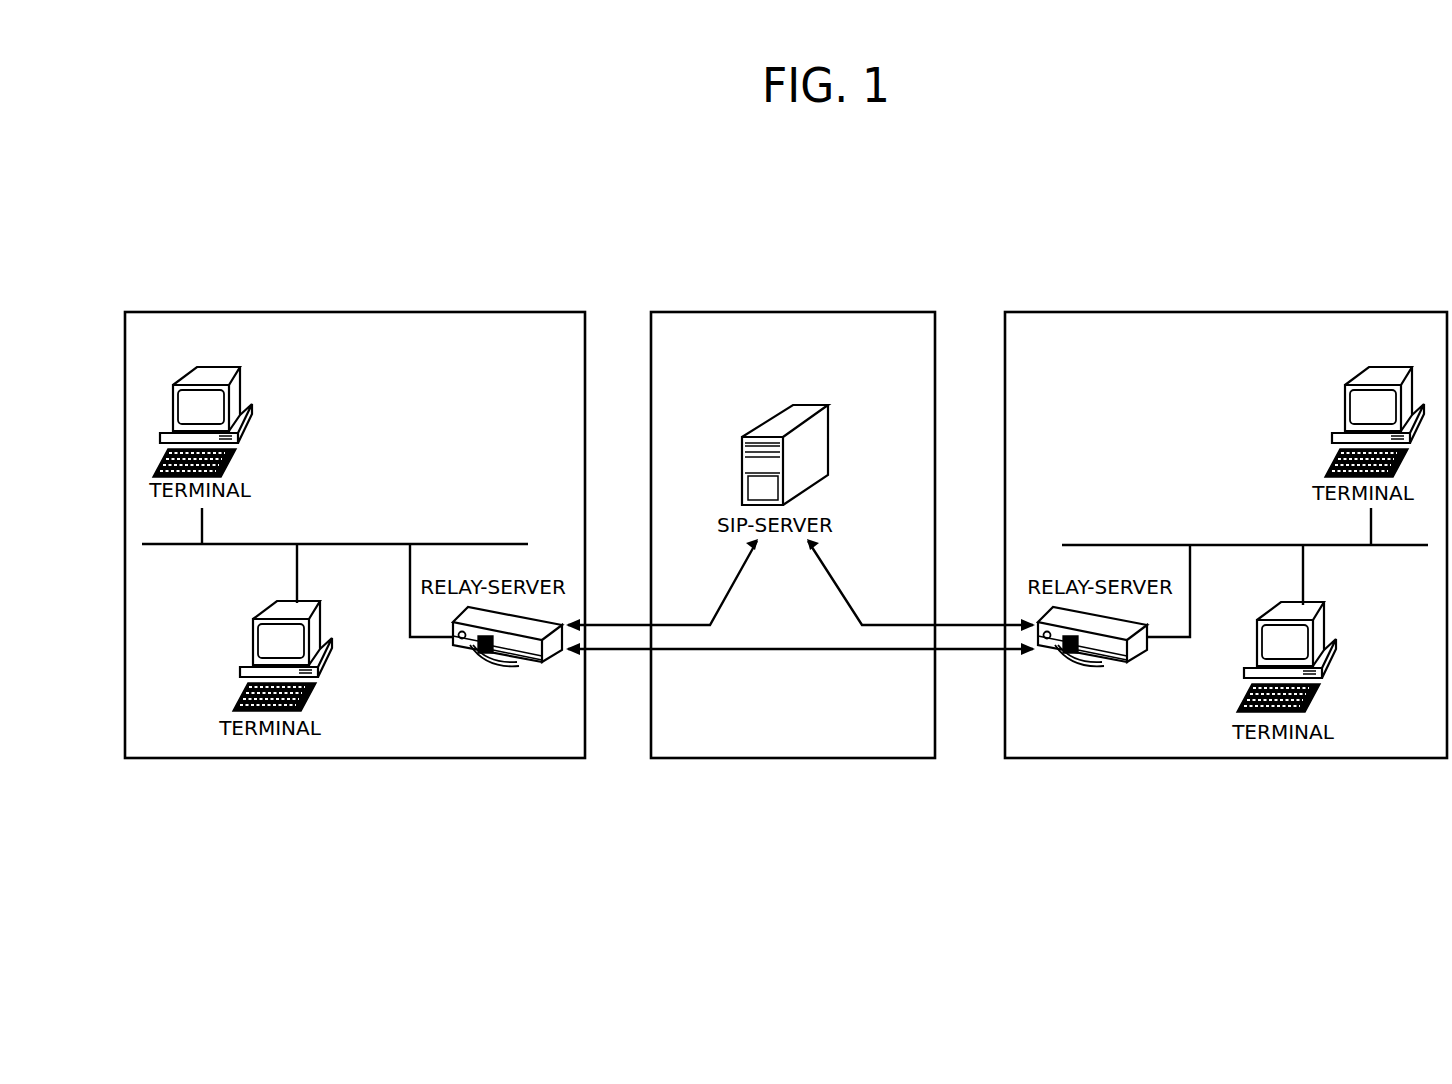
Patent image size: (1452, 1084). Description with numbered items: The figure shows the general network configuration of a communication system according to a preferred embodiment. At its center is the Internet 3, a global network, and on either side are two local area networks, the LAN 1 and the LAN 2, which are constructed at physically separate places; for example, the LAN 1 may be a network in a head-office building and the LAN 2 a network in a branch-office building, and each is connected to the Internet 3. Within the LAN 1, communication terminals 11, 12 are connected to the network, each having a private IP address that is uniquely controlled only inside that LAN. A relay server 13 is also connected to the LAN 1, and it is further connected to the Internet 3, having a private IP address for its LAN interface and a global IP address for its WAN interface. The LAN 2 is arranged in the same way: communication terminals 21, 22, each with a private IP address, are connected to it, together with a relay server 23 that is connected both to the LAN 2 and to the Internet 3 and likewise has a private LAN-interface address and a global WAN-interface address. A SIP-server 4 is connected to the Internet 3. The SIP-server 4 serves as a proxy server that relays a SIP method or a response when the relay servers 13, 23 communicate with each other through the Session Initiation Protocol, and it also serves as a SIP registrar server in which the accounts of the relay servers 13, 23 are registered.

The LAN 1 is at (537, 312).
The LAN 2 is at (1395, 312).
The Internet 3 is at (885, 312).
The SIP-server 4 is at (830, 437).
The communication terminal 11 is at (327, 667).
The communication terminal 12 is at (245, 432).
The relay server 13 is at (525, 665).
The communication terminal 21 is at (1333, 632).
The communication terminal 22 is at (1343, 403).
The relay server 23 is at (1113, 665).